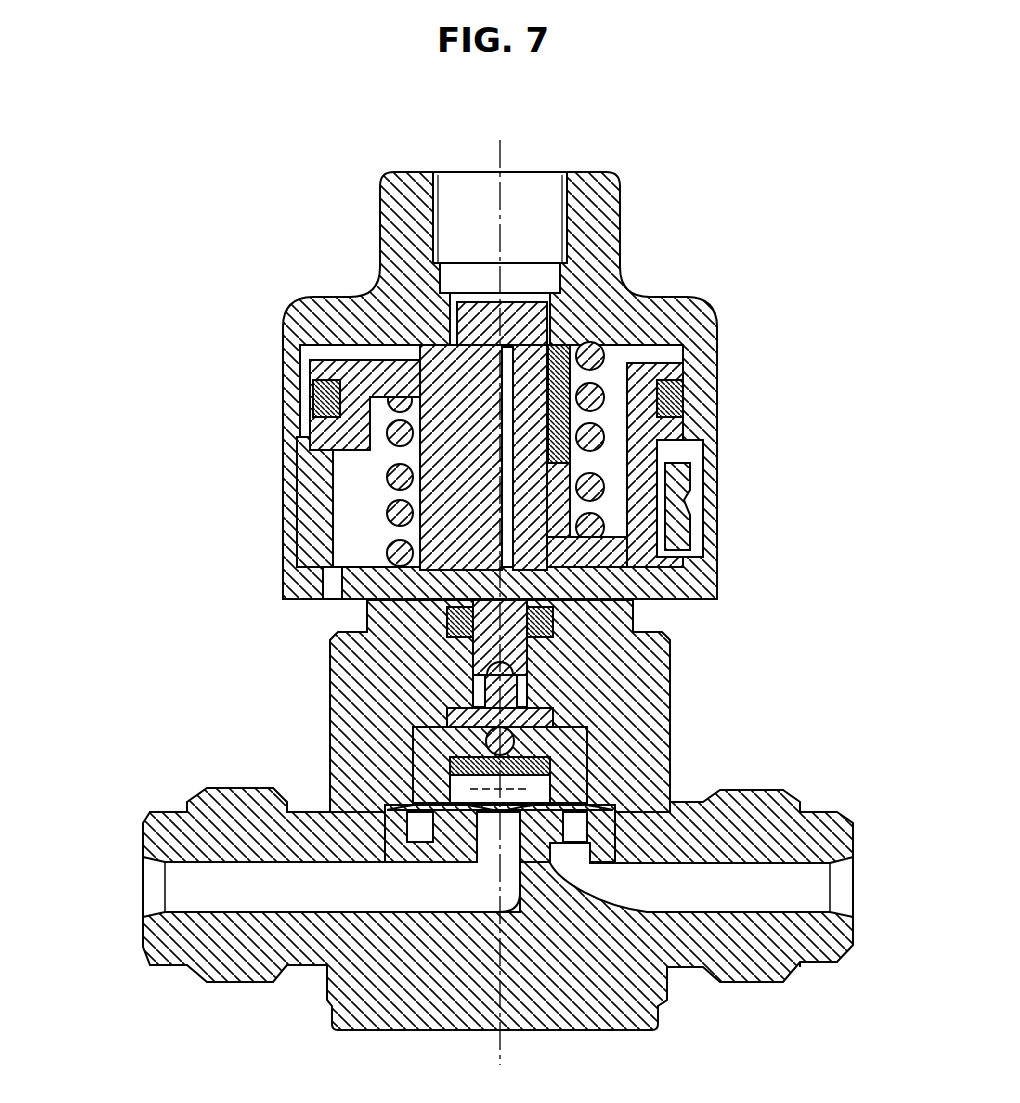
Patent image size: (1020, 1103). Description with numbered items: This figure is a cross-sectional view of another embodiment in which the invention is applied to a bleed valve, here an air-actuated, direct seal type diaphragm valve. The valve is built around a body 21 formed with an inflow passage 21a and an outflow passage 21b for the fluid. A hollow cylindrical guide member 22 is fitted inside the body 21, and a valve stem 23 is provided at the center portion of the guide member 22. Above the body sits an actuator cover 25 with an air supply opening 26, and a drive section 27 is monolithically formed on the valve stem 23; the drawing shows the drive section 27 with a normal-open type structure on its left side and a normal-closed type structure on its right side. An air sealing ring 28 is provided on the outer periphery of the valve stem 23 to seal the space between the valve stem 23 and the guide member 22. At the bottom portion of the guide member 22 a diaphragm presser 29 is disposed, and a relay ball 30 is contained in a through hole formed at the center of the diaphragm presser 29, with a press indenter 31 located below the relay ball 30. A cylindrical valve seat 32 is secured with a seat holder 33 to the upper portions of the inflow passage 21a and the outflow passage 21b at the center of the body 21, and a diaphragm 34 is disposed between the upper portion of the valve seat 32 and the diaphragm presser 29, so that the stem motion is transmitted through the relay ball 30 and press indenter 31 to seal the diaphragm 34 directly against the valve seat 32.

The body 21 is at (440, 860).
The inflow passage 21a is at (145, 868).
The outflow passage 21b is at (805, 884).
The guide member 22 is at (590, 683).
The valve stem 23 is at (495, 667).
The actuator cover 25 is at (292, 410).
The air supply opening 26 is at (540, 195).
The drive section 27 is at (365, 375).
The air sealing ring 28 is at (562, 614).
The diaphragm presser 29 is at (560, 792).
The relay ball 30 is at (600, 735).
The press indenter 31 is at (420, 714).
The valve seat 32 is at (463, 860).
The seat holder 33 is at (400, 808).
The diaphragm 34 is at (570, 832).